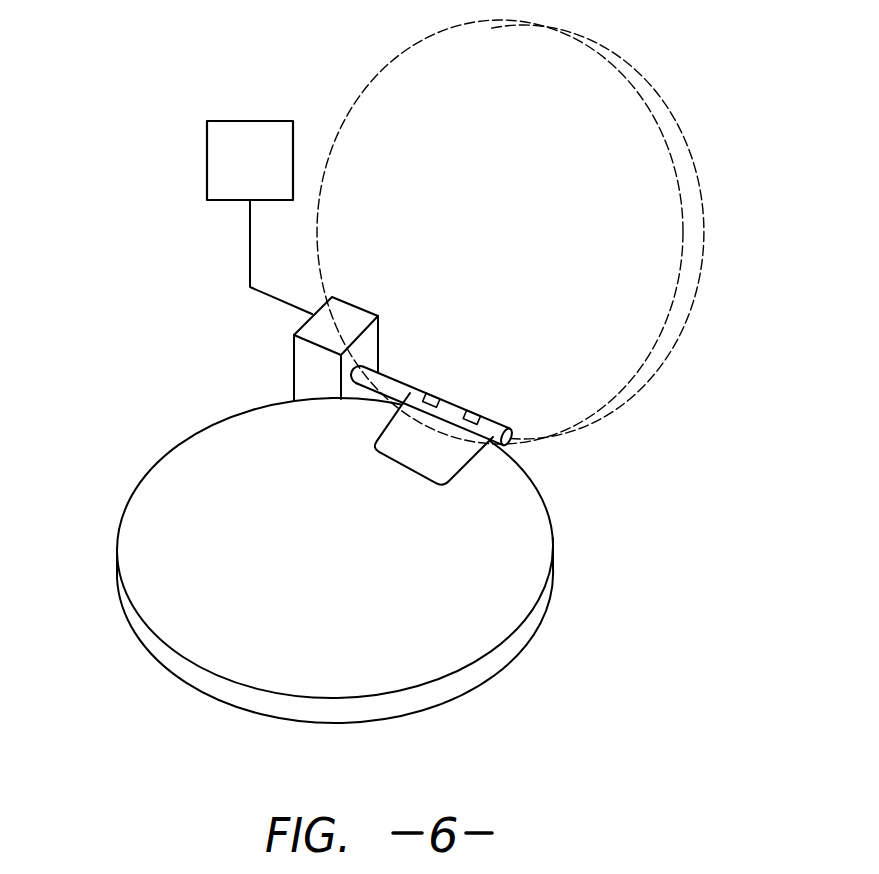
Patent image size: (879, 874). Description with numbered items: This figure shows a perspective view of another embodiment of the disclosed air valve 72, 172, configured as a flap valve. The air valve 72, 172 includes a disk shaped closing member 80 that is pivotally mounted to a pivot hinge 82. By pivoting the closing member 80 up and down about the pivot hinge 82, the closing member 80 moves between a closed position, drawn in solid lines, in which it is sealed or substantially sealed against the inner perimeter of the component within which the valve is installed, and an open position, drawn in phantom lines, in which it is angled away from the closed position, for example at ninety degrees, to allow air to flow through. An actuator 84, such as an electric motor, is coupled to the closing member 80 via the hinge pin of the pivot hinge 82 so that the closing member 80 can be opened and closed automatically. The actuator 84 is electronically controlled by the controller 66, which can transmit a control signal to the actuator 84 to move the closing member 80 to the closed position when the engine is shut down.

The controller 66 is at (263, 172).
The air valve 72 is at (383, 252).
The air valve 172 is at (383, 252).
The closing member 80 is at (197, 467).
The pivot hinge 82 is at (440, 398).
The actuator 84 is at (298, 375).